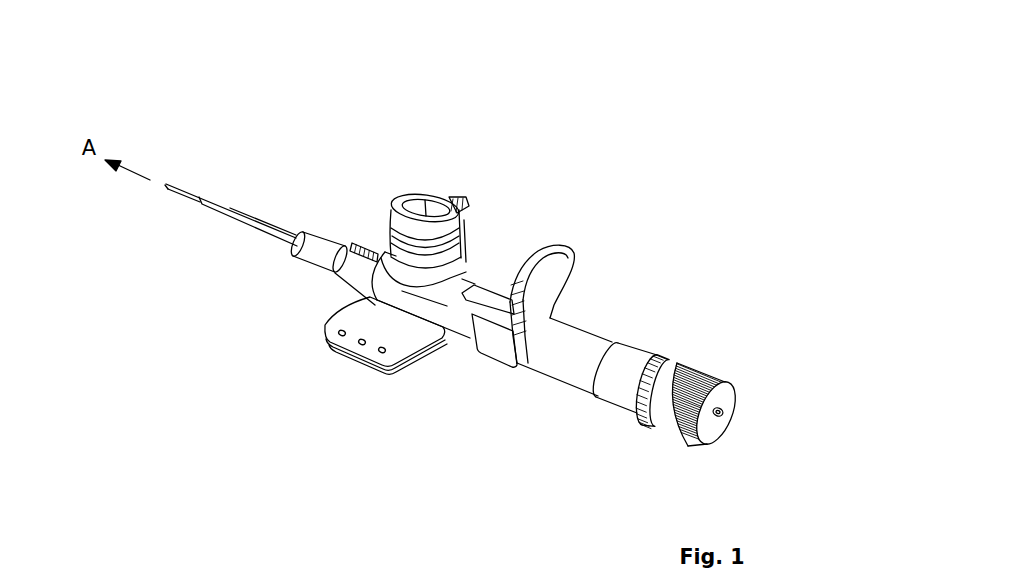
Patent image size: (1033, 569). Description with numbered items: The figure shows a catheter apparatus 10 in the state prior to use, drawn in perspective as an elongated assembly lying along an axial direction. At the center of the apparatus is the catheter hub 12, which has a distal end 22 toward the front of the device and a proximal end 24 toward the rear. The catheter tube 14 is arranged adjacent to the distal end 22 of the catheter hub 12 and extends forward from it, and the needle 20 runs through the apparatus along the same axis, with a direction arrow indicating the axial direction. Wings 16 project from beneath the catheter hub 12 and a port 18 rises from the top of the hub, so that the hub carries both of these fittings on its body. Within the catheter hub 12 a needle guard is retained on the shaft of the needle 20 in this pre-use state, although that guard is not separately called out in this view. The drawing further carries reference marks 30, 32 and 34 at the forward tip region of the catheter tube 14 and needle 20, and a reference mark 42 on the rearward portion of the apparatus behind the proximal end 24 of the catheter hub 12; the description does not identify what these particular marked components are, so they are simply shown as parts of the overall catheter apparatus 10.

The catheter apparatus 10 is at (385, 113).
The catheter hub 12 is at (457, 285).
The catheter tube 14 is at (273, 224).
The wings 16 is at (377, 362).
The port 18 is at (425, 204).
The needle 20 is at (548, 373).
The distal end 22 is at (307, 233).
The proximal end 24 is at (465, 326).
The needle 30 is at (168, 186).
The needle cannula 32 is at (203, 197).
The needle tip 34 is at (169, 188).
The rotary knob 42 is at (626, 358).